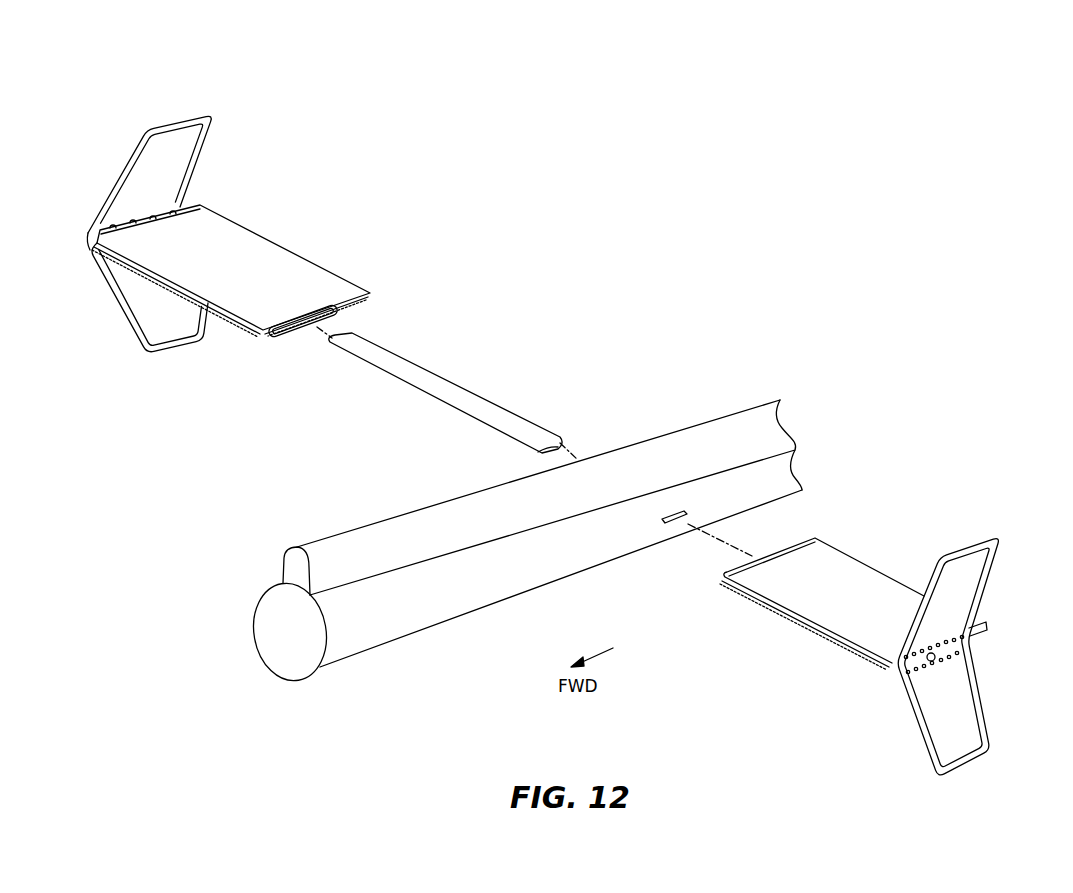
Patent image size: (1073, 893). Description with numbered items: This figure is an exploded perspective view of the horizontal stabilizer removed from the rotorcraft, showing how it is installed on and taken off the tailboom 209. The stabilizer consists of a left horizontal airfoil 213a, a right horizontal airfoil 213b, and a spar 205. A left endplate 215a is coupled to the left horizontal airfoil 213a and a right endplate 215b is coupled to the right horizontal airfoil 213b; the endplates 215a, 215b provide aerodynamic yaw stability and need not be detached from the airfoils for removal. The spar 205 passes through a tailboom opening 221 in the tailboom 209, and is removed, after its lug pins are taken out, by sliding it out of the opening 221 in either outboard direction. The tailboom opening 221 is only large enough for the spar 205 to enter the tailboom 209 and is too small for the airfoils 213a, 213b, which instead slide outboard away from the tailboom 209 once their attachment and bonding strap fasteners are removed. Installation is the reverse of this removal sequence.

The spar 205 is at (456, 393).
The tailboom 209 is at (458, 587).
The left horizontal airfoil 213a is at (860, 577).
The right horizontal airfoil 213b is at (267, 258).
The left endplate 215a is at (982, 530).
The right endplate 215b is at (213, 115).
The tailboom opening 221 is at (673, 524).